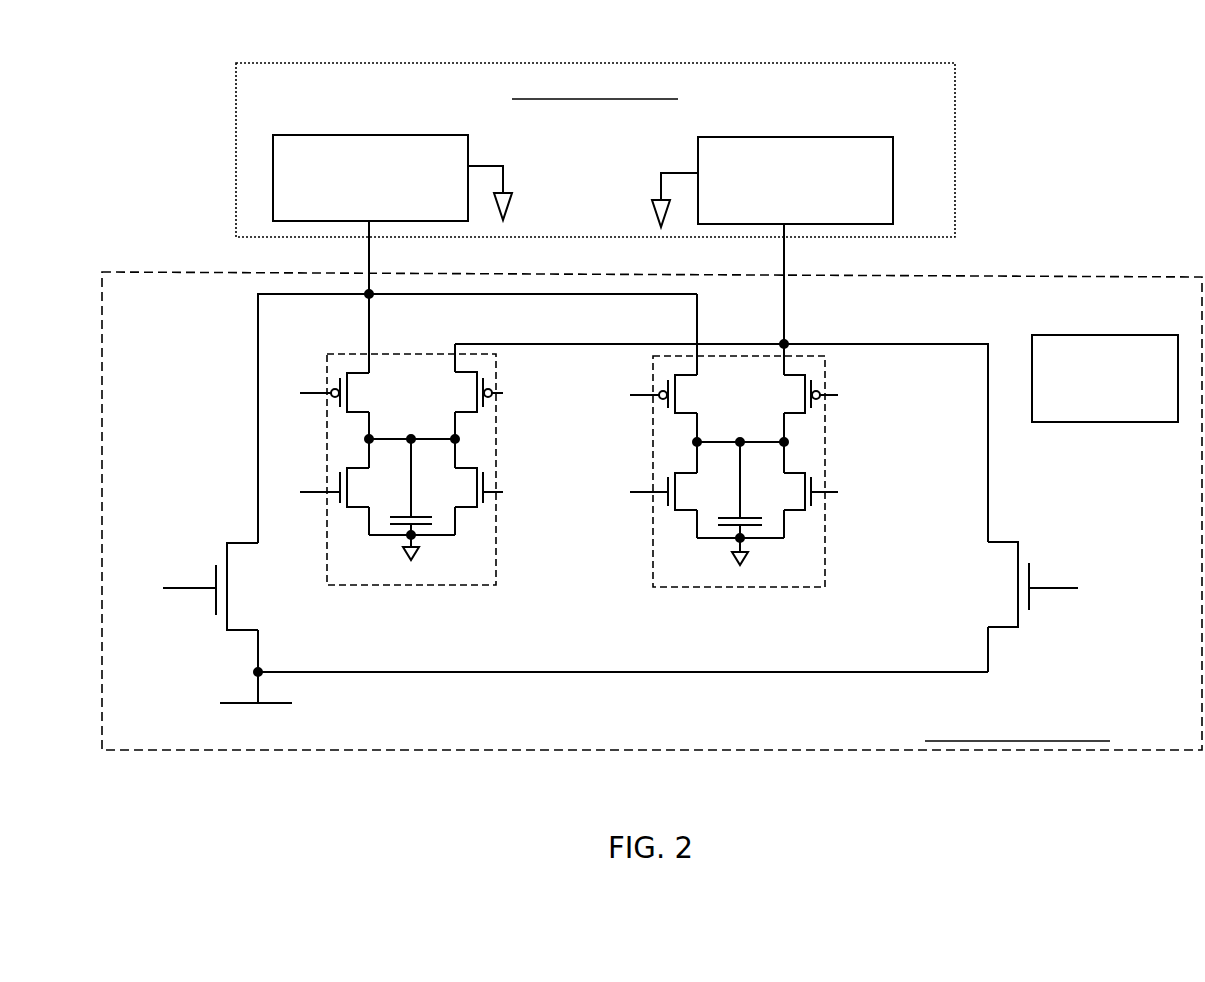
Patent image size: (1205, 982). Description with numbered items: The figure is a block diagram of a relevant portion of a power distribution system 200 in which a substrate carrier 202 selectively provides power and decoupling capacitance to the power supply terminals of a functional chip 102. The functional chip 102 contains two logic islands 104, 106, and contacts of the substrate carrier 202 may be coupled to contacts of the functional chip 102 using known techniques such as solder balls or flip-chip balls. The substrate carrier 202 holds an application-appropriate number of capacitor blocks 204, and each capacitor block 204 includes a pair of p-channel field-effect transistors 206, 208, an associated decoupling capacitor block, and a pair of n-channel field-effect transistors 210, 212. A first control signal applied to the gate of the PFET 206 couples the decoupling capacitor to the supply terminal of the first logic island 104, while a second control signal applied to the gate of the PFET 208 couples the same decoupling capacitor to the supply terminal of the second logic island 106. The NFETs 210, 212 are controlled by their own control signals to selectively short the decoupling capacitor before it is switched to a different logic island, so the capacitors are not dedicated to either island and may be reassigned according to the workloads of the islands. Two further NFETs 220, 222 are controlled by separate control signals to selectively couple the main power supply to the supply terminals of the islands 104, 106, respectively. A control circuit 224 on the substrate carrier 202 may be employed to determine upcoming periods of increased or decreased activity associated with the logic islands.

The functional chip 102 is at (883, 63).
The logic island 104 is at (335, 135).
The logic island 106 is at (760, 137).
The power distribution system 200 is at (1056, 159).
The substrate carrier 202 is at (1063, 276).
The capacitor block 204 is at (402, 585).
The p-channel field-effect transistor 206 is at (340, 360).
The p-channel field-effect transistor 208 is at (450, 388).
The n-channel field-effect transistor 210 is at (303, 502).
The n-channel field-effect transistor 212 is at (497, 502).
The n-channel field-effect transistor 220 is at (190, 622).
The n-channel field-effect transistor 222 is at (1053, 613).
The control circuit 224 is at (1076, 335).